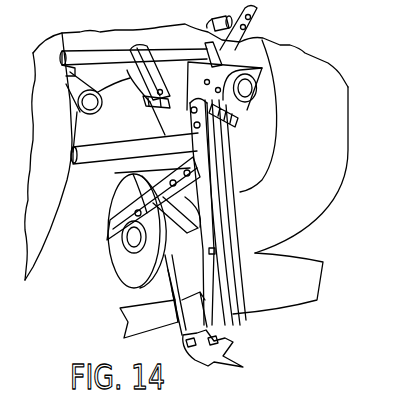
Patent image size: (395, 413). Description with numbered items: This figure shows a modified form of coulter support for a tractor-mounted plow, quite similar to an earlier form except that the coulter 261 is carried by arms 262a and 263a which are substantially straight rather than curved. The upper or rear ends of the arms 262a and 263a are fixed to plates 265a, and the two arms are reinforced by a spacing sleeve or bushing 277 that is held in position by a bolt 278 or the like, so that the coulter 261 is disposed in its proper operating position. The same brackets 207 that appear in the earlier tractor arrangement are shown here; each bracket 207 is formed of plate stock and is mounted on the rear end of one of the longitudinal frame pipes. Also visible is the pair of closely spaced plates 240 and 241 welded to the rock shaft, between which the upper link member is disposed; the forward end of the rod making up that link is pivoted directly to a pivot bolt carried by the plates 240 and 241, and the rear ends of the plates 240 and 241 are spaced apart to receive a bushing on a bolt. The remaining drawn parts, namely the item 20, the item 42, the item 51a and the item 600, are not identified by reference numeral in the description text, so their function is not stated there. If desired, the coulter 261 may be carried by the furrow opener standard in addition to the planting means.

The plow standard strip 20 is at (125, 320).
The lower cross tube 42 is at (76, 152).
The pivot eye 51a is at (228, 100).
The bracket 207 is at (243, 50).
The plate 240 is at (153, 72).
The plate 241 is at (131, 66).
The coulter 261 is at (122, 257).
The coulter supporting arm 262a is at (147, 207).
The coulter supporting arm 263a is at (209, 251).
The plates 265a is at (240, 173).
The spacing sleeve or bushing 277 is at (124, 283).
The bolt 278 is at (110, 228).
The plow blade 600 is at (213, 356).